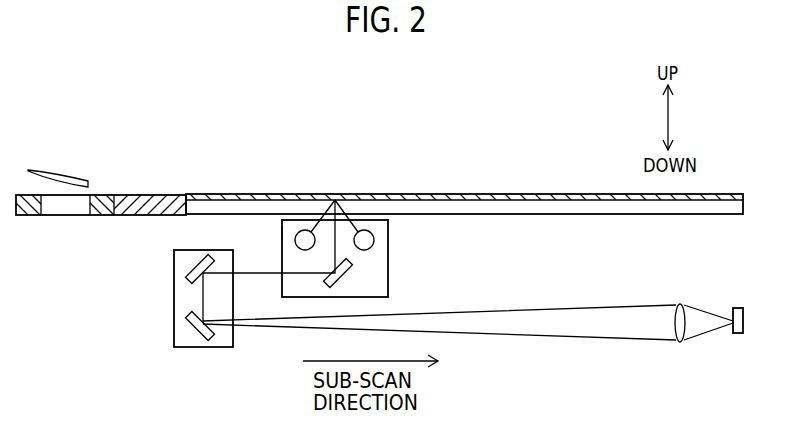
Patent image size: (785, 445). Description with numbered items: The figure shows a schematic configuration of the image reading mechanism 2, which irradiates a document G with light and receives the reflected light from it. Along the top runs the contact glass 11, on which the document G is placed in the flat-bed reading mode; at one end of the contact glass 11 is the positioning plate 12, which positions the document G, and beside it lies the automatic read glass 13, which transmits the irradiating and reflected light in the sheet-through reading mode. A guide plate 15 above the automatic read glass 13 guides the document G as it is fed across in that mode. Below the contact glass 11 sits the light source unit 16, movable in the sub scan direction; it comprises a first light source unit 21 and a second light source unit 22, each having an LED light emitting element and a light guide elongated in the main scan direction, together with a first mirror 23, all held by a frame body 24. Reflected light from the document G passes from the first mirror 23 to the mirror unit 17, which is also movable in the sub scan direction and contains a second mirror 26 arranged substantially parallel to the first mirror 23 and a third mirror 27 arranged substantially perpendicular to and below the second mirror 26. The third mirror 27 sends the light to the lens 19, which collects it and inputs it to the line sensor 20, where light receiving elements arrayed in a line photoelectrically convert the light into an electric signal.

The image reading mechanism 2 is at (424, 158).
The document G is at (480, 194).
The contact glass 11 is at (594, 207).
The positioning plate 12 is at (145, 197).
The automatic read glass 13 is at (67, 217).
The guide plate 15 is at (78, 180).
The light source unit 16 is at (400, 264).
The mirror unit 17 is at (169, 305).
The lens 19 is at (677, 304).
The line sensor 20 is at (734, 308).
The first light source unit 21 is at (296, 245).
The second light source unit 22 is at (374, 241).
The first mirror 23 is at (349, 282).
The frame body 24 is at (282, 233).
The second mirror 26 is at (195, 262).
The third mirror 27 is at (196, 333).